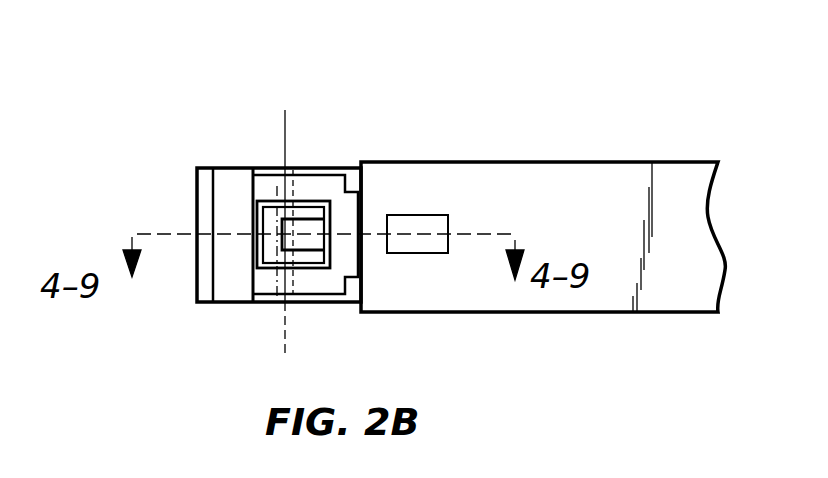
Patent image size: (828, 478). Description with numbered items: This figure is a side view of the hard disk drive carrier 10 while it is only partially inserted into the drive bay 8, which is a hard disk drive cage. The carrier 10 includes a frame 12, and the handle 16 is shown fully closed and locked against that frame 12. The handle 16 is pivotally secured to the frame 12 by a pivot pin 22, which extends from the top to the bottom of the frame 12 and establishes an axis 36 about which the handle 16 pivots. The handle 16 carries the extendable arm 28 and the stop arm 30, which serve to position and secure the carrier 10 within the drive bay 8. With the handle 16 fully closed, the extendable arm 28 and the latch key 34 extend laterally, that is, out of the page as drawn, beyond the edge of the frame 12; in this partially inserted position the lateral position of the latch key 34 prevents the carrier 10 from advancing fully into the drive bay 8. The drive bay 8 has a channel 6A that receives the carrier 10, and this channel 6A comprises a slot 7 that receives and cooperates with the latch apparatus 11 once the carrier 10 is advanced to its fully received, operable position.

The channel 6A is at (678, 293).
The slot 7 is at (427, 254).
The drive bay 8 is at (666, 127).
The hard disk drive carrier 10 is at (212, 100).
The latch apparatus 11 is at (249, 358).
The frame 12 is at (333, 167).
The handle 16 is at (228, 168).
The pivot pin 22 is at (277, 186).
The extendable arm 28 is at (303, 212).
The stop arm 30 is at (205, 275).
The latch key 34 is at (303, 229).
The axis 36 is at (285, 125).